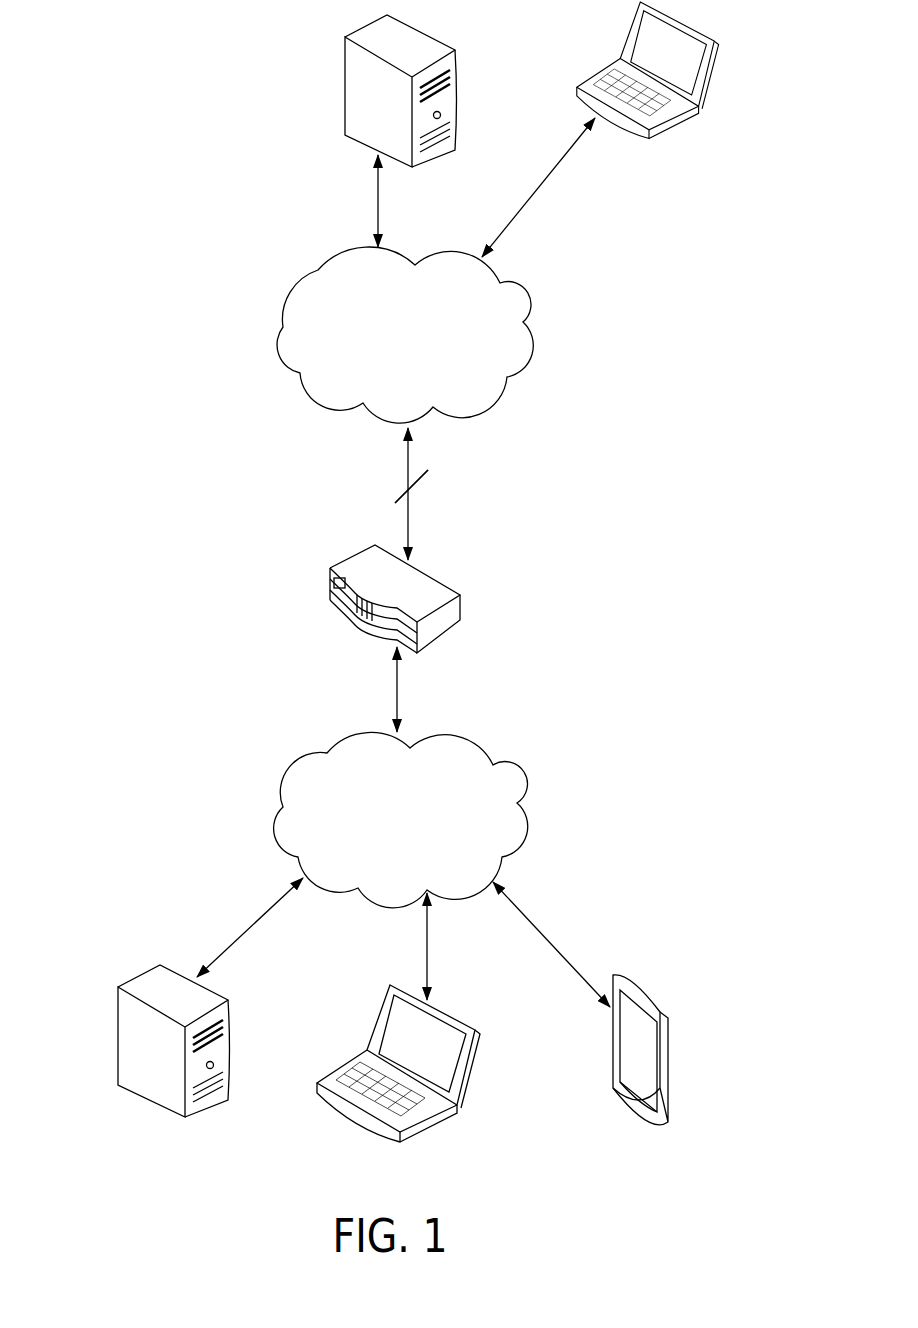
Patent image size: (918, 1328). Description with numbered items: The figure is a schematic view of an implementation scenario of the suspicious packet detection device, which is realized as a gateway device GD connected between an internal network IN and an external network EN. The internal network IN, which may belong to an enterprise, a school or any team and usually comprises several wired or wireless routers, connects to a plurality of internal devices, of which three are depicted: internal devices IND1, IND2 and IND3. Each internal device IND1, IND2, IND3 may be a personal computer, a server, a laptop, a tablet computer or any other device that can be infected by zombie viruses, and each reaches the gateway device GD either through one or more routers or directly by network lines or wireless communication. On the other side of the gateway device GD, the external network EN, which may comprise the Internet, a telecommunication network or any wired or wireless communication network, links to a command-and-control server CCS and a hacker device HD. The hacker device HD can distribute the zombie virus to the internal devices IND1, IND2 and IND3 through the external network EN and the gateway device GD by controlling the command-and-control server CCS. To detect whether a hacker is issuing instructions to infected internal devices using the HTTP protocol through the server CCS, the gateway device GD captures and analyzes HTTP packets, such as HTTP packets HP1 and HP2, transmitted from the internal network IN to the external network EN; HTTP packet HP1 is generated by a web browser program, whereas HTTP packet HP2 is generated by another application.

The command-and-control server CCS is at (345, 93).
The hacker device HD is at (677, 123).
The external network EN is at (318, 270).
The HTTP packet HP1 is at (403, 492).
The HTTP packet HP2 is at (411, 486).
The gateway device GD is at (442, 583).
The internal network IN is at (335, 738).
The internal device IND1 is at (118, 1053).
The internal device IND2 is at (468, 1072).
The internal device IND3 is at (668, 1060).